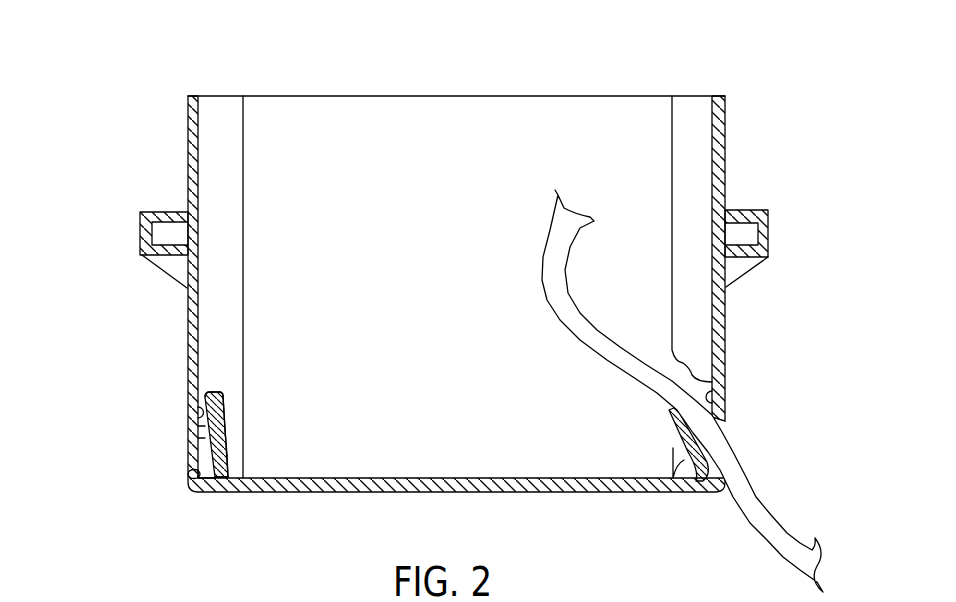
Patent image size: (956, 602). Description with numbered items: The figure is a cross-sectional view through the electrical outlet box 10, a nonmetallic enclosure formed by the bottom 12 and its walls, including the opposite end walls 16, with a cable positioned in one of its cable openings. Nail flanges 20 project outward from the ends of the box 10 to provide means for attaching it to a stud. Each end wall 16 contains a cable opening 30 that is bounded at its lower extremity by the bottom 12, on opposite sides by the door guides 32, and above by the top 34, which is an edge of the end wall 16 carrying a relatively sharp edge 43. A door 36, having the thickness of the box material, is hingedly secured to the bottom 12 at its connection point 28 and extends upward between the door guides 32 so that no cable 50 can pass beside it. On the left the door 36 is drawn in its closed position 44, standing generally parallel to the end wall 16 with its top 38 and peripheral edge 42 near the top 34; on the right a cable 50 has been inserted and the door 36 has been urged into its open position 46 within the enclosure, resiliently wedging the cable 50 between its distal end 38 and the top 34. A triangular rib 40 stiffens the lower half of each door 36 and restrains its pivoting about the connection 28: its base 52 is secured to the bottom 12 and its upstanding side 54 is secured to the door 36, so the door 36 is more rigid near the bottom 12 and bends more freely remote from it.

The electrical outlet box 10 is at (426, 290).
The bottom 12 is at (188, 479).
The end wall 16 is at (186, 358).
The nail flange 20 is at (140, 233).
The connection point 28 is at (216, 485).
The cable opening 30 is at (186, 448).
The door guide 32 is at (213, 405).
The top of cable opening 34 is at (197, 411).
The door 36 is at (225, 418).
The top of door 38 is at (206, 392).
The rib 40 is at (226, 465).
The peripheral edge 42 is at (219, 394).
The edge 43 is at (188, 429).
The closed position 44 is at (133, 455).
The open position 46 is at (640, 427).
The cable 50 is at (759, 495).
The base of rib 52 is at (229, 486).
The upstanding side of rib 54 is at (227, 445).